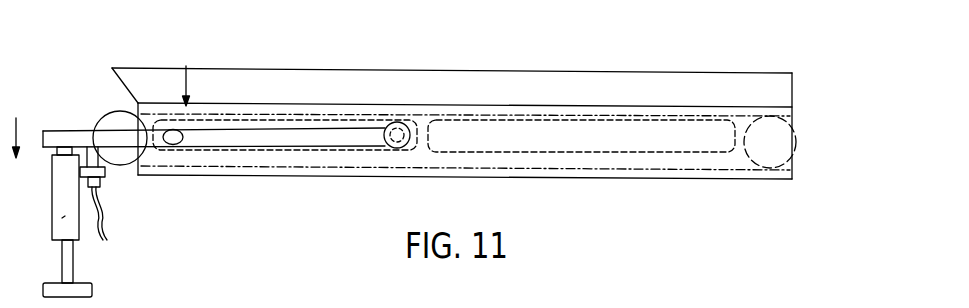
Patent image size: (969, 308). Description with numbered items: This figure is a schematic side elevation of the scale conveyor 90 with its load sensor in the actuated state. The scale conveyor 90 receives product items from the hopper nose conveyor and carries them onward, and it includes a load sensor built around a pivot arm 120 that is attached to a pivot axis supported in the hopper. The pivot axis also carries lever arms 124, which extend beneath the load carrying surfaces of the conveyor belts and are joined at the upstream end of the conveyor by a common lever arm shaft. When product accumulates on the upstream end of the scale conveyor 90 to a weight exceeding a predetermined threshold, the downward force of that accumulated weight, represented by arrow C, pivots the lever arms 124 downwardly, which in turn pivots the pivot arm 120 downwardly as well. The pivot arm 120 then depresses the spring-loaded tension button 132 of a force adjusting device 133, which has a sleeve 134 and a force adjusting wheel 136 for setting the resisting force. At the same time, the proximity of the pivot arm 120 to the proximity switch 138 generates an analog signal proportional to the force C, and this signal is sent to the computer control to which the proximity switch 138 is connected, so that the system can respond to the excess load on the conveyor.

The scale conveyor 90 is at (408, 66).
The pivot arm 120 is at (281, 152).
The lever arms 124 is at (215, 174).
The spring-loaded tension button 132 is at (61, 147).
The force adjusting device 133 is at (58, 220).
The sleeve 134 is at (63, 208).
The force adjusting wheel 136 is at (73, 265).
The proximity switch 138 is at (107, 173).
The arrow C (downward force of accumulated product weight) C is at (197, 82).